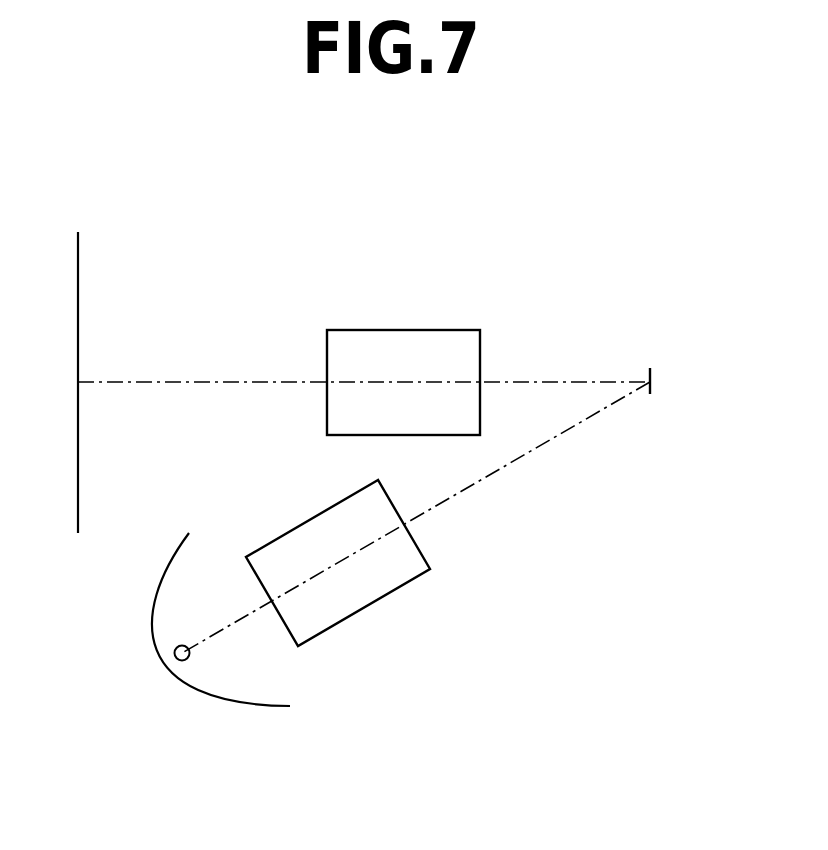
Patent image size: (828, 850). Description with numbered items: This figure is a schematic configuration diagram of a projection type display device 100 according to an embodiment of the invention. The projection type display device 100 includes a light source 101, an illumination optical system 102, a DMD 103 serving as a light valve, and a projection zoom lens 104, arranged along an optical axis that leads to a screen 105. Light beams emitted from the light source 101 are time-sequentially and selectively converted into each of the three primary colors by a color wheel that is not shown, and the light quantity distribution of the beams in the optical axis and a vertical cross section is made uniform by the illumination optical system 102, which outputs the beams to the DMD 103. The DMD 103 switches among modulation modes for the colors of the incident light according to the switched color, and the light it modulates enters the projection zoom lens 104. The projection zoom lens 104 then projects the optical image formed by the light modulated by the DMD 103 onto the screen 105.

The projection type display device 100 is at (360, 222).
The light source 101 is at (193, 703).
The illumination optical system 102 is at (410, 583).
The DMD 103 is at (652, 385).
The projection zoom lens 104 is at (435, 329).
The screen 105 is at (79, 251).